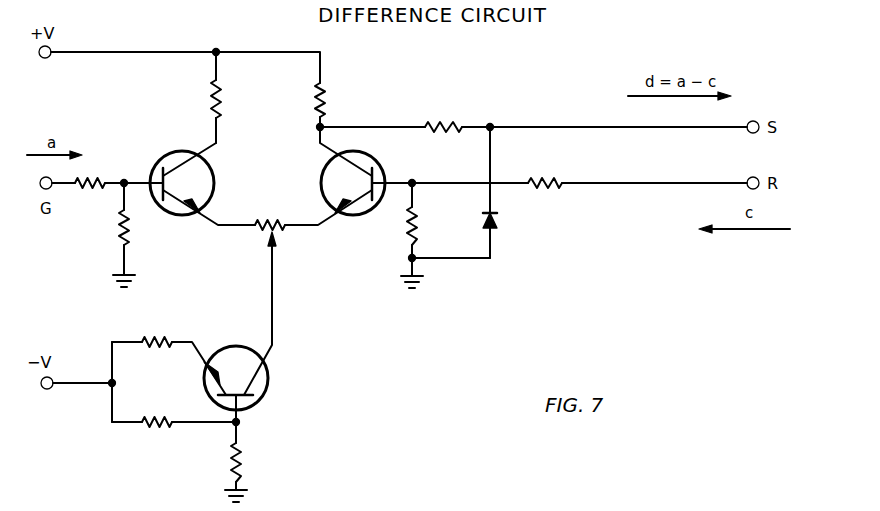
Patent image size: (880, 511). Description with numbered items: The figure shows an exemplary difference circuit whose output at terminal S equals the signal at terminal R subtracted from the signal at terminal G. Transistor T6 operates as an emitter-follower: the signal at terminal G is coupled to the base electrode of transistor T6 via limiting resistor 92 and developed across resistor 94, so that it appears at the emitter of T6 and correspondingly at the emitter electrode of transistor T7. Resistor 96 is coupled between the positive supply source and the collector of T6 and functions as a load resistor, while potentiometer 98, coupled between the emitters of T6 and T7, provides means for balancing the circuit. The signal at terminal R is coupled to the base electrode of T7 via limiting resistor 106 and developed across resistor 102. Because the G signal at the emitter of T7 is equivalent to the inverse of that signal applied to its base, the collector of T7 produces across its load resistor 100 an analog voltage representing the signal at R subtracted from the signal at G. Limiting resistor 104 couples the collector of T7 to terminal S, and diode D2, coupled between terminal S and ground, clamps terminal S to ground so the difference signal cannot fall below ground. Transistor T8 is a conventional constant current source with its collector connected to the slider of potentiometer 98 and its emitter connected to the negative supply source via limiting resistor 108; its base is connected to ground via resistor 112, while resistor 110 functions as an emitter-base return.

The limiting resistor 92 is at (88, 190).
The resistor 94 is at (130, 228).
The load resistor 96 is at (219, 100).
The potentiometer 98 is at (270, 267).
The load resistor 100 is at (317, 100).
The resistor 102 is at (406, 232).
The limiting resistor 104 is at (443, 115).
The limiting resistor 106 is at (545, 171).
The limiting resistor 108 is at (157, 330).
The resistor 110 is at (157, 430).
The resistor 112 is at (242, 465).
The transistor T6 is at (202, 171).
The transistor T7 is at (335, 176).
The transistor T8 is at (240, 327).
The diode D2 is at (500, 220).